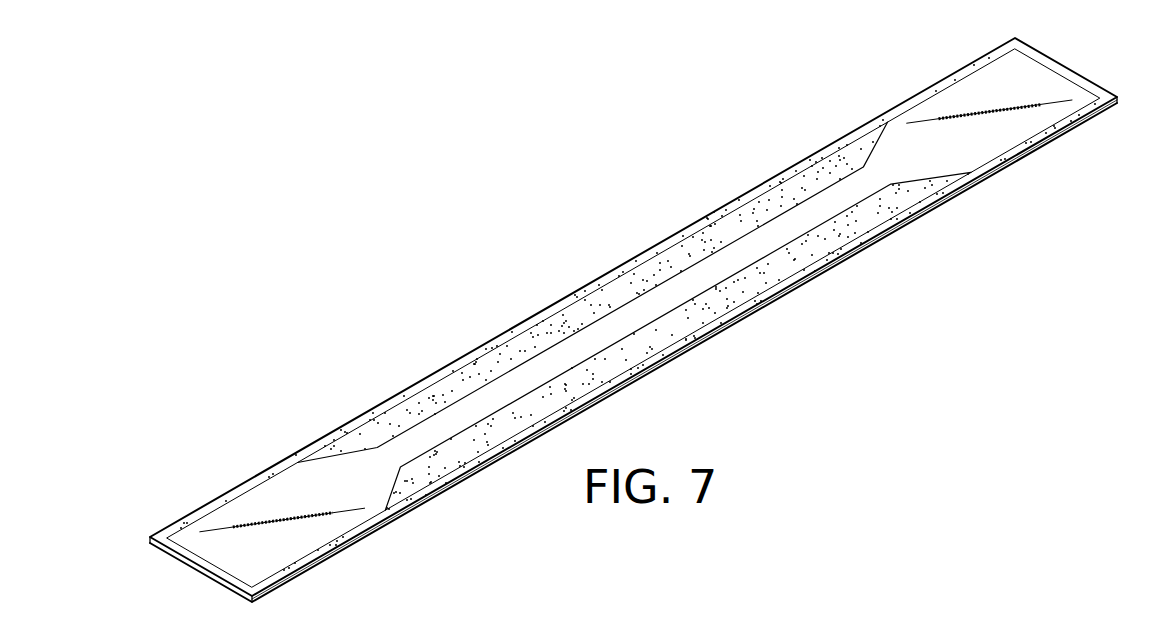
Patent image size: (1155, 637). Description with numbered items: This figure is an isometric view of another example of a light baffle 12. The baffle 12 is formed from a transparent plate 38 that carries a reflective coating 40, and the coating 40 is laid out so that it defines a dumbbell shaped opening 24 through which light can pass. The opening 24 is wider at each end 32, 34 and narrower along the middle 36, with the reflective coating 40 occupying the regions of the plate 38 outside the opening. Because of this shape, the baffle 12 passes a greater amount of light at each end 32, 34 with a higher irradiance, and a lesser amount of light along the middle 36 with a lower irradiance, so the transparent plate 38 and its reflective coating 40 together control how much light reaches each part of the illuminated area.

The baffle 12 is at (670, 248).
The dumbbell shaped opening 24 is at (403, 448).
The end 32 is at (228, 552).
The end 34 is at (1047, 88).
The middle 36 is at (605, 330).
The transparent plate 38 is at (338, 532).
The reflective coating 40 is at (740, 241).